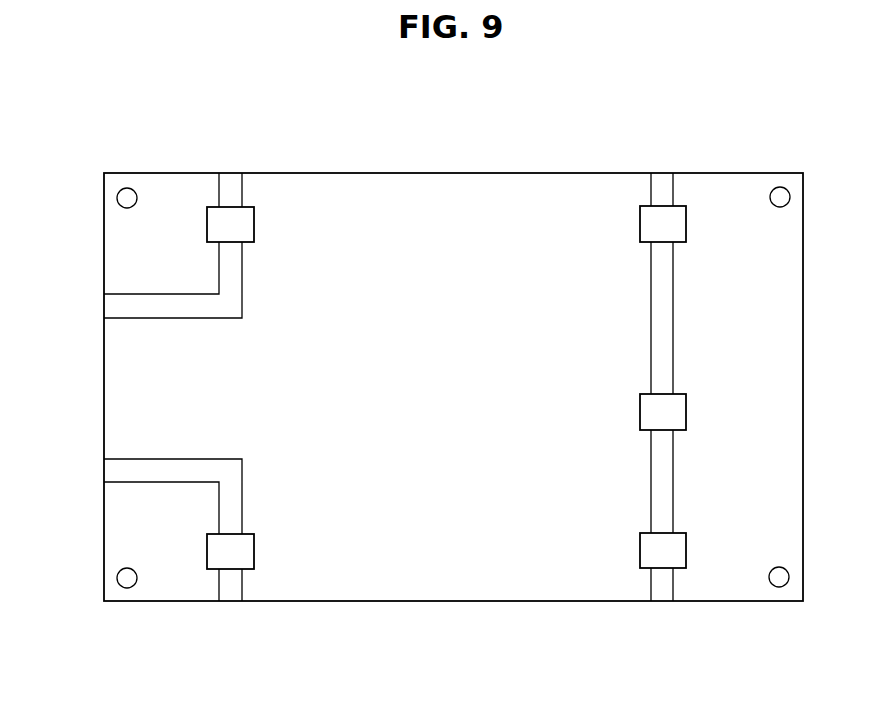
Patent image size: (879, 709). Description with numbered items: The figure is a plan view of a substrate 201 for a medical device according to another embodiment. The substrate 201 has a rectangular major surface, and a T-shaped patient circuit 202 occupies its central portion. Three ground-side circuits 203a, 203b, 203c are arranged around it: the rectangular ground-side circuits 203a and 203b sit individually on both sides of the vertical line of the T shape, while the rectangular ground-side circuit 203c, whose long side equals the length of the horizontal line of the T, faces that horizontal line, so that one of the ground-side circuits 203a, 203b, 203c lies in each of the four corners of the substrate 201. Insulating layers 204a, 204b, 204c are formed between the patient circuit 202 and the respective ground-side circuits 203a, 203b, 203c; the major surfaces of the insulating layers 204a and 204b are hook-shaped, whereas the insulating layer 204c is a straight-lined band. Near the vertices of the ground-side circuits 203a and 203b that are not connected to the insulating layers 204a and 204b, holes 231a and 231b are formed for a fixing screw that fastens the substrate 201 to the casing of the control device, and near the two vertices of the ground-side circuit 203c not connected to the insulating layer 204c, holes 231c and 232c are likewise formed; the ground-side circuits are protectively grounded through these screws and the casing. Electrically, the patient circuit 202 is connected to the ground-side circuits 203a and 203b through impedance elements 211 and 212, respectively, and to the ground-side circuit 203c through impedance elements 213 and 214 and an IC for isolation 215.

The substrate 201 is at (503, 158).
The patient circuit 202 is at (427, 197).
The ground-side circuit 203a is at (116, 238).
The ground-side circuit 203b is at (116, 539).
The ground-side circuit 203c is at (737, 227).
The insulating layer 204a is at (116, 307).
The insulating layer 204b is at (116, 471).
The insulating layer 204c is at (663, 587).
The impedance element 211 is at (255, 222).
The impedance element 212 is at (255, 549).
The impedance element 213 is at (639, 222).
The impedance element 214 is at (639, 548).
The IC for isolation 215 is at (639, 409).
The hole 231a is at (128, 188).
The hole 231b is at (130, 588).
The hole 231c is at (780, 188).
The hole 232c is at (779, 587).